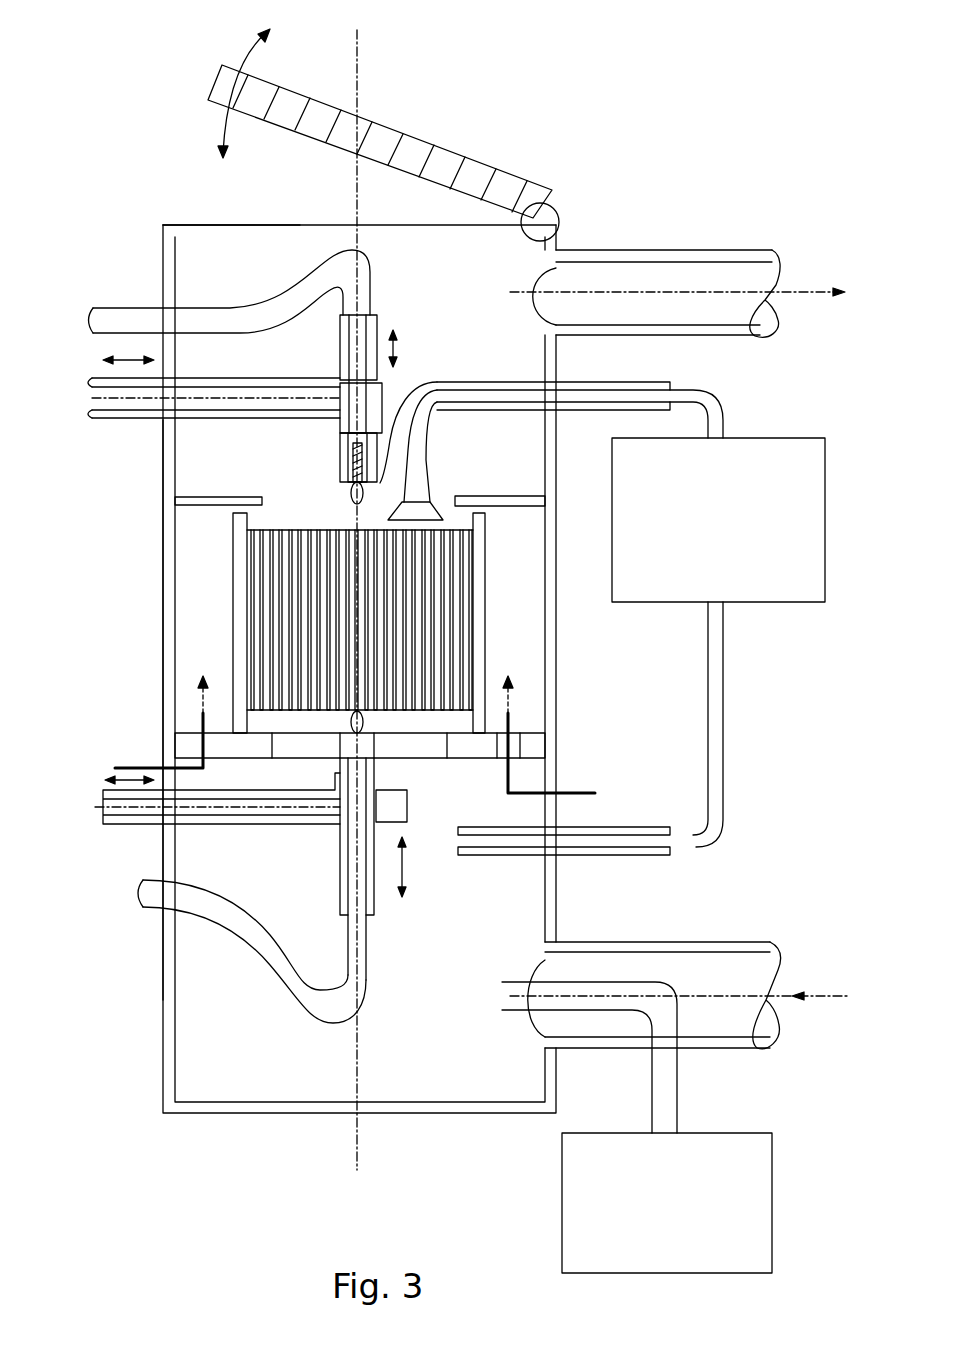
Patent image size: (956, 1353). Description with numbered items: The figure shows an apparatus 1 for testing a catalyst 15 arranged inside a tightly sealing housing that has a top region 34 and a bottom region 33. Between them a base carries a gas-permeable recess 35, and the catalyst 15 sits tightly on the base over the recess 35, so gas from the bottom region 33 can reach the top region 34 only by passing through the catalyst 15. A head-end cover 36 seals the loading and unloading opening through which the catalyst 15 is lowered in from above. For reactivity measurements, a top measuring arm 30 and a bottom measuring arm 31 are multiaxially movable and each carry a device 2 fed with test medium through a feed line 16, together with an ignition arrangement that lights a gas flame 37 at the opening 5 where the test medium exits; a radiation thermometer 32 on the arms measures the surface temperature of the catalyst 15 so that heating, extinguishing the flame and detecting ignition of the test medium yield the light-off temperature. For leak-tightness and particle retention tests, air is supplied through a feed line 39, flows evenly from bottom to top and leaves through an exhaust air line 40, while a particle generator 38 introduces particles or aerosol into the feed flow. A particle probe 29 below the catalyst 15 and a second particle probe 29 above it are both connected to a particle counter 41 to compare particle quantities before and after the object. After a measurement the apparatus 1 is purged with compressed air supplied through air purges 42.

The apparatus 1 is at (110, 95).
The device 2 is at (302, 455).
The opening 5 is at (342, 489).
The catalyst 15 is at (445, 638).
The feed line 16 is at (130, 312).
The particle probe 29 is at (590, 388).
The top measuring arm 30 is at (307, 380).
The bottom measuring arm 31 is at (128, 820).
The radiation thermometer 32 is at (400, 383).
The bottom region 33 is at (210, 1057).
The top region 34 is at (205, 595).
The recess 35 is at (405, 752).
The head-end cover 36 is at (420, 158).
The gas flame 37 is at (352, 503).
The particle generator 38 is at (651, 1218).
The feed line 39 is at (698, 1030).
The exhaust air line 40 is at (701, 319).
The particle counter 41 is at (701, 533).
The air purge 42 is at (140, 765).